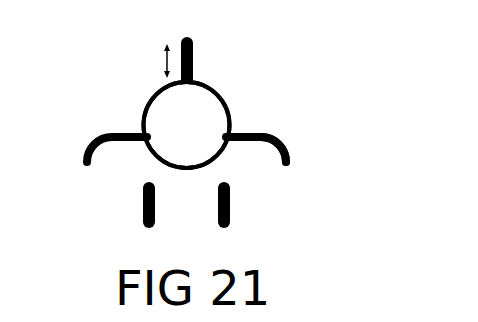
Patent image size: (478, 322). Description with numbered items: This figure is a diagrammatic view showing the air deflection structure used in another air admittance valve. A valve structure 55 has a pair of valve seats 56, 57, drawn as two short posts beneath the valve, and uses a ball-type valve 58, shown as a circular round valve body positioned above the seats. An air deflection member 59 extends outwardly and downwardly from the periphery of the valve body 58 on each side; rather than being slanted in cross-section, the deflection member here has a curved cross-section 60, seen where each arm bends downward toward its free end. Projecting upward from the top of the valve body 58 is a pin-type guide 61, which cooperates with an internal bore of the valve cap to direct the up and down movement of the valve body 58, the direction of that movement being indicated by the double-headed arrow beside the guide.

The valve structure 55 is at (145, 87).
The valve seat 56 is at (143, 208).
The valve seat 57 is at (230, 207).
The ball-type valve 58 is at (220, 95).
The air deflection member 59 is at (258, 135).
The curved cross-section 60 is at (82, 157).
The pin-type guide 61 is at (193, 58).